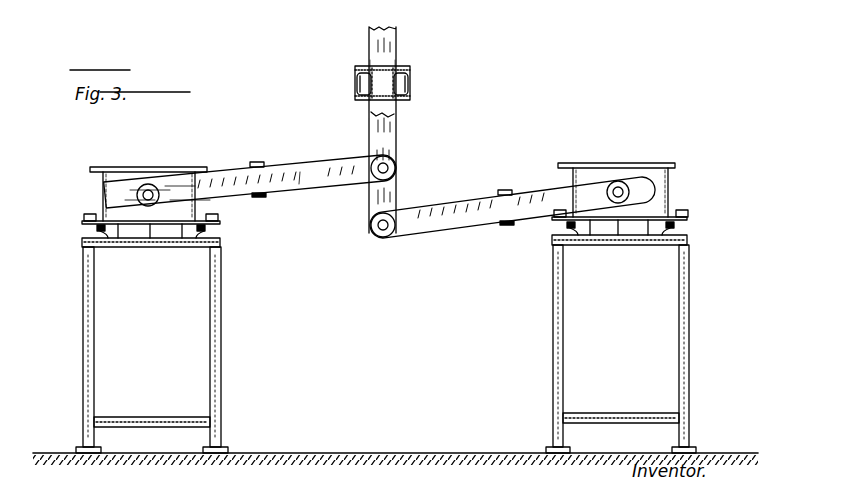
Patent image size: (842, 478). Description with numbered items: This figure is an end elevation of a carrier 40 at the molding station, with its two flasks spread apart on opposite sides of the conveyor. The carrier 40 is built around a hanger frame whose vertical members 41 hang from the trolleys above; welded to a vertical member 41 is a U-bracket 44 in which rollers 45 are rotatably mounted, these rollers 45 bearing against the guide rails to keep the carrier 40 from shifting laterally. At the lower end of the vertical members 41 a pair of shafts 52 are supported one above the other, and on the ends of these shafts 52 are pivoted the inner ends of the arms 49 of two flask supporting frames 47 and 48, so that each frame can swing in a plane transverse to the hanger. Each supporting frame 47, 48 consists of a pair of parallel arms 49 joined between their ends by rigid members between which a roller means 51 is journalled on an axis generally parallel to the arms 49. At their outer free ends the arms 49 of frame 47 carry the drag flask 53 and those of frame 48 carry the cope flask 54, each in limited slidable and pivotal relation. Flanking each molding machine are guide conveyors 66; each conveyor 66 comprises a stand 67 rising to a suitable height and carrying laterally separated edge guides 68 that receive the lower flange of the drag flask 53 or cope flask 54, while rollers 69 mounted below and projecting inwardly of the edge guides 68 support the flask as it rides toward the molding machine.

The carrier 40 is at (399, 123).
The vertical member 41 is at (395, 40).
The U-bracket 44 is at (372, 58).
The rollers 45 is at (356, 83).
The flask supporting frame 47 is at (445, 240).
The flask supporting frame 48 is at (301, 160).
The arms 49 is at (326, 190).
The roller means 51 is at (252, 162).
The shafts 52 is at (396, 166).
The drag flask 53 is at (640, 163).
The cope flask 54 is at (126, 167).
The guide conveyor 66 is at (149, 314).
The stand 67 is at (222, 314).
The edge guides 68 is at (86, 214).
The rollers 69 is at (100, 234).